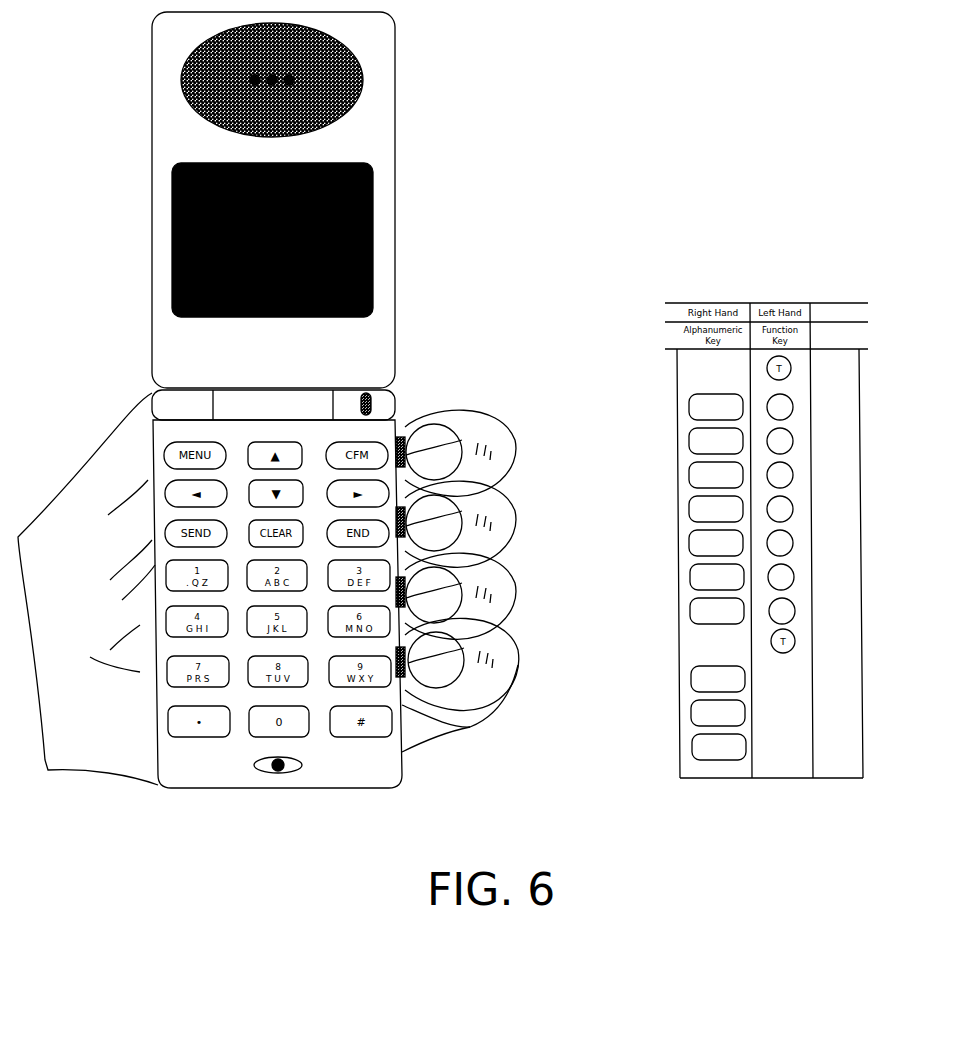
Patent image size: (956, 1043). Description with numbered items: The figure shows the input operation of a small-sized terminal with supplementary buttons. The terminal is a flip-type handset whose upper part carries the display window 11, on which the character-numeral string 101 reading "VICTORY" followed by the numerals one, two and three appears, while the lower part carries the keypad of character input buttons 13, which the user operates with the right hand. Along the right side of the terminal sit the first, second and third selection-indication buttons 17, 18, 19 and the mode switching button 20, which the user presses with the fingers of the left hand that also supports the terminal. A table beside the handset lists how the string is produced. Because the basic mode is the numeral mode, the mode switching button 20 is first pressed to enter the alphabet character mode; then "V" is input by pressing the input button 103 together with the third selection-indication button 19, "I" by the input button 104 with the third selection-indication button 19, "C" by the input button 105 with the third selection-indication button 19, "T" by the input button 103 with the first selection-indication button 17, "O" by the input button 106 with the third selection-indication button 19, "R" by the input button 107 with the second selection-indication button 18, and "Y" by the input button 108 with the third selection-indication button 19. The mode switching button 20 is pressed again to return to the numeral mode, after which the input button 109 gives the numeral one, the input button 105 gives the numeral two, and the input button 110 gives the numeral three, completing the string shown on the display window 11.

The display window 11 is at (400, 243).
The character-numeral string 101 is at (330, 247).
The character input buttons 13 is at (470, 727).
The first selection-indication button 17 is at (465, 427).
The second selection-indication button 18 is at (465, 498).
The third selection-indication button 19 is at (467, 566).
The mode switching button 20 is at (470, 633).
The input button representing "V" and "T" 103 is at (689, 413).
The input button representing "I" 104 is at (689, 447).
The input button representing "C" and numeral "2" 105 is at (689, 481).
The input button representing "O" 106 is at (689, 549).
The input button representing "R" 107 is at (690, 583).
The input button representing "Y" 108 is at (690, 617).
The input button representing numeral "1" 109 is at (691, 685).
The input button representing numeral "3" 110 is at (692, 753).